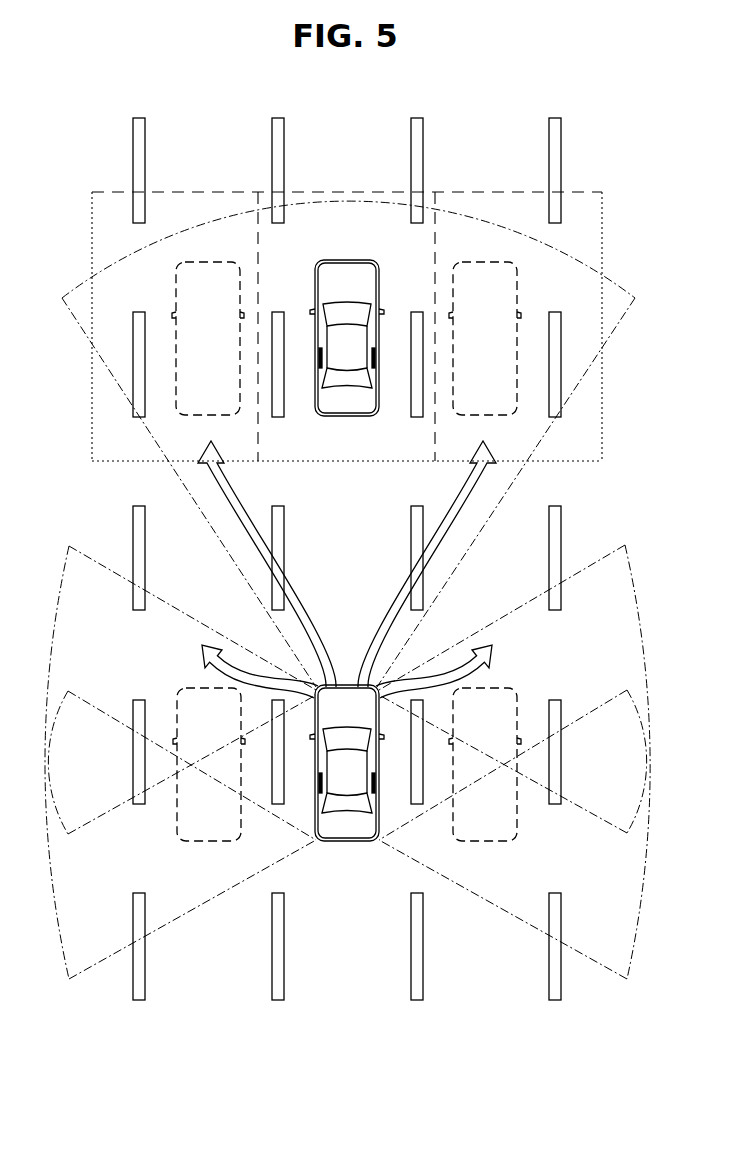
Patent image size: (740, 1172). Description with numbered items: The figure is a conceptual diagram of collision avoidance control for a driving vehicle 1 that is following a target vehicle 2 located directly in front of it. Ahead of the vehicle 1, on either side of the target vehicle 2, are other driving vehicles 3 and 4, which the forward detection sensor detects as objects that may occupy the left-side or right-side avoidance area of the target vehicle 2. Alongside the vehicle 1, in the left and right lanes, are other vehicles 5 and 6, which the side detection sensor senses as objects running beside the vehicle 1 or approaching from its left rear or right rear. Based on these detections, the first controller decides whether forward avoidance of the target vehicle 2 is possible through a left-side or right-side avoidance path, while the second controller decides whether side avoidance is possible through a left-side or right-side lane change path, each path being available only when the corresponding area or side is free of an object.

The vehicle 1 is at (345, 827).
The target vehicle 2 is at (344, 400).
The other vehicle 3 is at (203, 260).
The other vehicle 4 is at (489, 260).
The other vehicle 5 is at (208, 842).
The other vehicle 6 is at (485, 842).